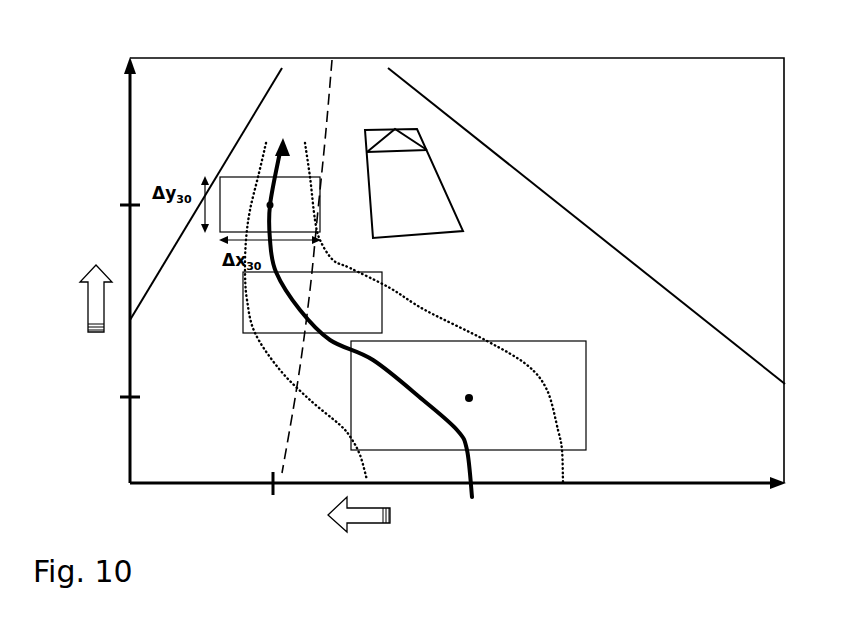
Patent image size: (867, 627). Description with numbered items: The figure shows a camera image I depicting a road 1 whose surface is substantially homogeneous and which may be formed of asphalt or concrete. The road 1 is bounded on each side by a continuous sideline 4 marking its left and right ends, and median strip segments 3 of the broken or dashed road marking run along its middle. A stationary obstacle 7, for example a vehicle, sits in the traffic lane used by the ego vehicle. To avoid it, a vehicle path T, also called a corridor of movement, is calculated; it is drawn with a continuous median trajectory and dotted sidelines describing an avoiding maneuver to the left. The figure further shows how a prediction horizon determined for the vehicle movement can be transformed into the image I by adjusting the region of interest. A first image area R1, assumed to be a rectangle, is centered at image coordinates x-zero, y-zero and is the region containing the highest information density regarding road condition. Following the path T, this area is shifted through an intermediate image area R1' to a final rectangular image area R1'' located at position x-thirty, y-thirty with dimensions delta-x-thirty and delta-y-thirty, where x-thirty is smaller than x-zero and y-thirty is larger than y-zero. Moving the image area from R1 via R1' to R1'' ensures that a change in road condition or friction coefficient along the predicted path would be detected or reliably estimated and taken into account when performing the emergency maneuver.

The road 1 is at (176, 466).
The median strip segments 3 is at (332, 58).
The continuous sideline 4 is at (275, 66).
The stationary obstacle 7 is at (414, 183).
The camera image I is at (714, 44).
The vehicle path T is at (404, 303).
The first image area R1 is at (486, 395).
The intermediate image area R1' is at (271, 302).
The adjusted image area R1'' is at (240, 175).